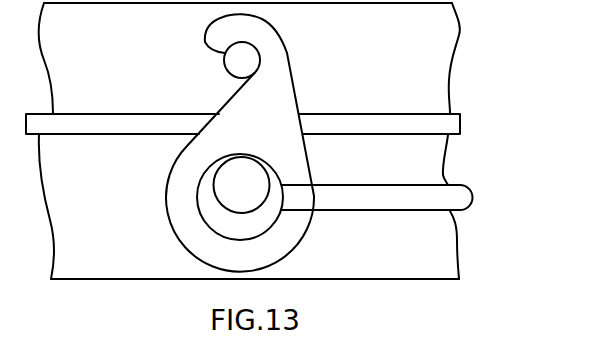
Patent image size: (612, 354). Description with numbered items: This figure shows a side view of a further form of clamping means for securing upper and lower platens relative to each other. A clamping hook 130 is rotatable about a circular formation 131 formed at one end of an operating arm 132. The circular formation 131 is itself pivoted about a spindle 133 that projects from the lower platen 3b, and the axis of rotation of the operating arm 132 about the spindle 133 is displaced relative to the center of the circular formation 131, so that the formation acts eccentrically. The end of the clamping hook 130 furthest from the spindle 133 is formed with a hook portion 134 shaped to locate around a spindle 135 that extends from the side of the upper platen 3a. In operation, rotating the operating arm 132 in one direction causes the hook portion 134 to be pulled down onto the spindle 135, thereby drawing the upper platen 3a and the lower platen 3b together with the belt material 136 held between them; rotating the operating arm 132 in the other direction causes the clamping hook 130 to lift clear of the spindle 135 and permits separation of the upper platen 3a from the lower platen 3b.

The upper platen 3a is at (445, 48).
The lower platen 3b is at (452, 256).
The clamping hook 130 is at (286, 93).
The circular formation 131 is at (207, 209).
The operating arm 132 is at (373, 207).
The spindle 133 is at (258, 178).
The hook portion 134 is at (264, 34).
The spindle 135 is at (224, 66).
The belt material 136 is at (461, 125).